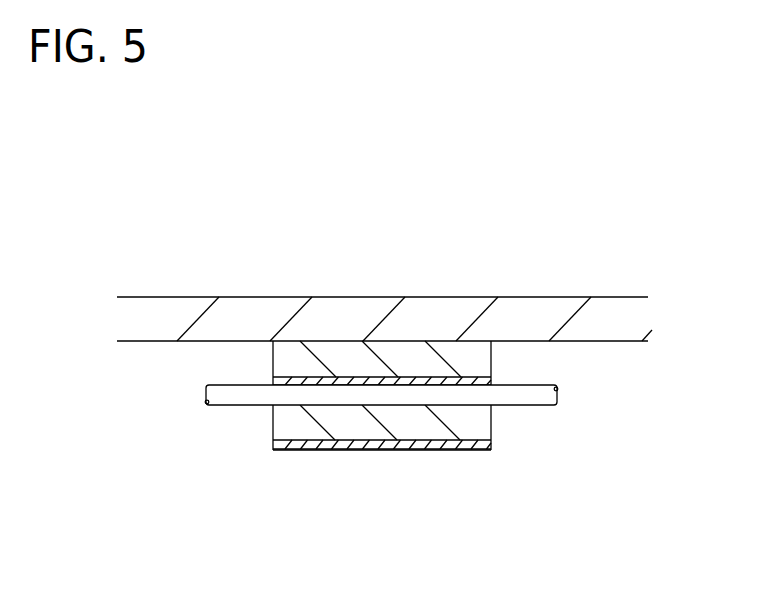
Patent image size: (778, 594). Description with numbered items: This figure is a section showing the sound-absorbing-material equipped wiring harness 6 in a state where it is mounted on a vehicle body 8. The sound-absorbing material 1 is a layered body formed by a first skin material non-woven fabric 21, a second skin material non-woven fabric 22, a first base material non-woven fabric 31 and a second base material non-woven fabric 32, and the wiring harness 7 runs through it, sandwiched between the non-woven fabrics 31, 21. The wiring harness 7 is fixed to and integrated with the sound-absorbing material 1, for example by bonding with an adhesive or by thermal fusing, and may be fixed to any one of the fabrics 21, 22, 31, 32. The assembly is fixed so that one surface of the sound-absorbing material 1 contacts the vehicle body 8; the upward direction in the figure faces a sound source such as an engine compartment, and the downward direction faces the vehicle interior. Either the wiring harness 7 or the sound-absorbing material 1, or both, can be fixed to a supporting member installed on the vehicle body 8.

The sound-absorbing material 1 is at (438, 445).
The sound-absorbing-material equipped wiring harness 6 is at (438, 448).
The wiring harness 7 is at (227, 407).
The vehicle body 8 is at (135, 341).
The first skin material non-woven fabric 21 is at (488, 380).
The second skin material non-woven fabric 22 is at (382, 477).
The first base material non-woven fabric 31 is at (490, 425).
The second base material non-woven fabric 32 is at (487, 360).